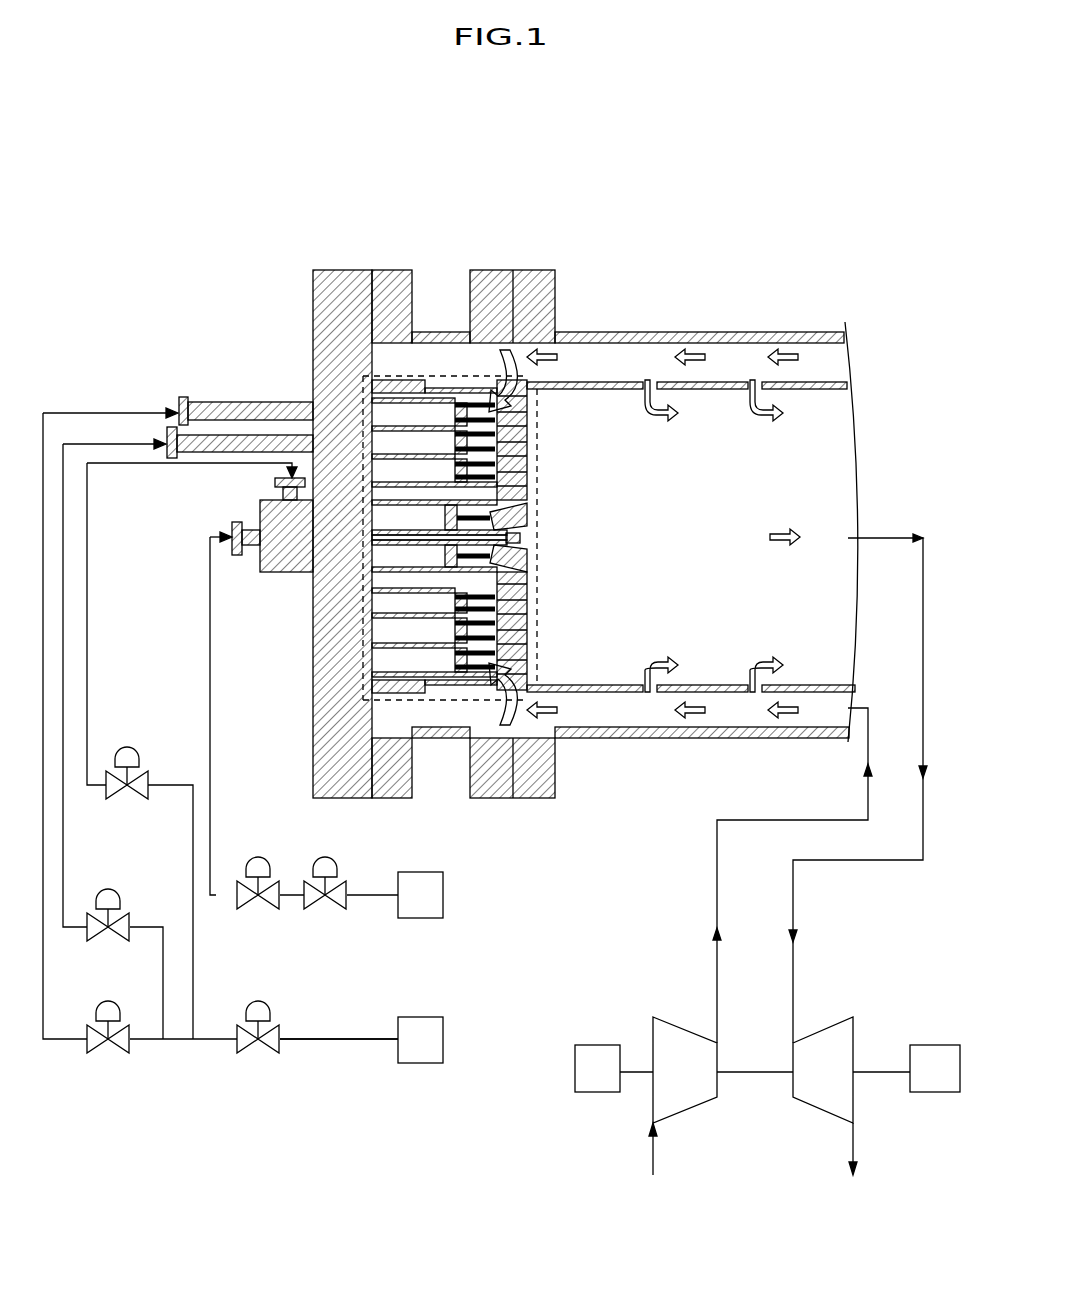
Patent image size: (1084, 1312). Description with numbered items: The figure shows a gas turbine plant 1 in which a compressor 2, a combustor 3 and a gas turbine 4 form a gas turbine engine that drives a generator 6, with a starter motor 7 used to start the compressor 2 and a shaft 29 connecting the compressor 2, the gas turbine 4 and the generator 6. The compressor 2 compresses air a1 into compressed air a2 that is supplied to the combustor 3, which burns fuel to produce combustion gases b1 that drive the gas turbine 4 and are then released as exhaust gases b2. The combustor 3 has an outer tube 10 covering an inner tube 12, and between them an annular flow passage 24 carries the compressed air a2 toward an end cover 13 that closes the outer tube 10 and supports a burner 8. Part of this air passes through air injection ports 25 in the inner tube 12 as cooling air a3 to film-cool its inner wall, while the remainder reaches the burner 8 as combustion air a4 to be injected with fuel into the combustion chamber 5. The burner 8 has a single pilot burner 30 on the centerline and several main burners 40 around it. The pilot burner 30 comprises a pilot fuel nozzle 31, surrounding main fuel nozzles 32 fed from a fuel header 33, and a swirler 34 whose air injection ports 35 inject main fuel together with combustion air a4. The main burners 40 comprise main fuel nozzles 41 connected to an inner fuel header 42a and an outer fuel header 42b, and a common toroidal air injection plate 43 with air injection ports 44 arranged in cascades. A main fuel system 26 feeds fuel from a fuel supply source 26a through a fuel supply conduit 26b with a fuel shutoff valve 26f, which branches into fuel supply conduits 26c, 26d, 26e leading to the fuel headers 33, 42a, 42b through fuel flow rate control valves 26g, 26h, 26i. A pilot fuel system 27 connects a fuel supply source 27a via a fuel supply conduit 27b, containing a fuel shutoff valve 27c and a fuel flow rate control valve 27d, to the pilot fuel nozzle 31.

The gas turbine plant 1 is at (541, 190).
The compressor 2 is at (685, 1070).
The combustor 3 is at (669, 279).
The gas turbine 4 is at (823, 1070).
The combustion chamber 5 is at (739, 591).
The generator 6 is at (935, 1068).
The starter motor 7 is at (597, 1068).
The burner 8 is at (447, 374).
The outer tube 10 is at (637, 332).
The inner tube 12 is at (721, 382).
The end cover 13 is at (341, 268).
The annular flow passage 24 is at (742, 722).
The air injection ports 25 is at (645, 684).
The main fuel system 26 is at (160, 1068).
The fuel supply source 26a is at (443, 1039).
The fuel supply conduit 26b is at (342, 1038).
The fuel supply conduit 26c is at (128, 464).
The fuel supply conduit 26d is at (110, 443).
The fuel supply conduit 26e is at (112, 412).
The fuel shutoff valve 26f is at (258, 997).
The fuel flow rate control valve 26g is at (127, 752).
The fuel flow rate control valve 26h is at (110, 886).
The fuel flow rate control valve 26i is at (109, 997).
The pilot fuel system 27 is at (488, 923).
The fuel supply source 27a is at (443, 893).
The fuel supply conduit 27b is at (210, 664).
The fuel shutoff valve 27c is at (324, 855).
The fuel flow rate control valve 27d is at (256, 855).
The shaft 29 is at (751, 1074).
The pilot burner 30 is at (546, 546).
The pilot fuel nozzle 31 is at (438, 548).
The main fuel nozzles 32 is at (480, 518).
The fuel header 33 is at (425, 532).
The swirler 34 is at (528, 560).
The air injection ports 35 is at (528, 527).
The main burners 40 is at (545, 444).
The main fuel nozzles 41 is at (483, 403).
The fuel header 42a is at (433, 455).
The fuel header 42b is at (433, 427).
The air injection plate 43 is at (529, 625).
The air injection ports 44 is at (518, 404).
The air a1 is at (654, 1166).
The compressed air a2 is at (798, 357).
The cooling air a3 is at (676, 672).
The combustion air a4 is at (474, 710).
The combustion gases b1 is at (765, 537).
The exhaust gases b2 is at (854, 1166).